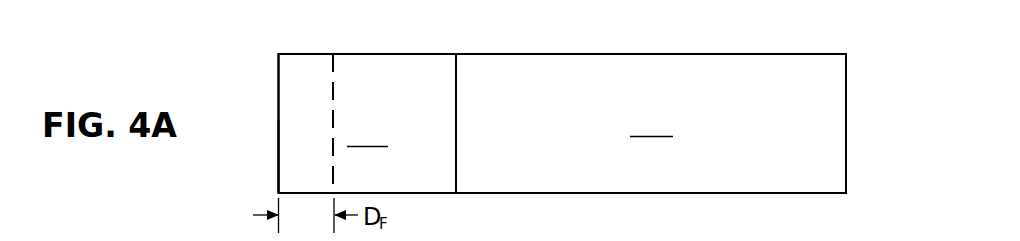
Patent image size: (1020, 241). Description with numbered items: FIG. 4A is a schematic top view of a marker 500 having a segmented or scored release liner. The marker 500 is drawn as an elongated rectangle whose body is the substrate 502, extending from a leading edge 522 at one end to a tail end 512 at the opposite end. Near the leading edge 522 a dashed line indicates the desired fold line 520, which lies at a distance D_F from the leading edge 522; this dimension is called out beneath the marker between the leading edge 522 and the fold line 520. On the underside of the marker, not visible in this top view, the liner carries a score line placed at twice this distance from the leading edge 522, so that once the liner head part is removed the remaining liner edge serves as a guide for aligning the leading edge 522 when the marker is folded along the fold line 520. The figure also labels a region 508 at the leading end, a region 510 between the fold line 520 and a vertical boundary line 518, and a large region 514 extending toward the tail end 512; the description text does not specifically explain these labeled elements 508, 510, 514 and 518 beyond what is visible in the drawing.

The marker 500 is at (920, 115).
The substrate 502 is at (603, 85).
The leading edge region 508 is at (263, 118).
The leading edge margin region 510 is at (370, 135).
The tail end 512 is at (856, 172).
The print area 514 is at (653, 125).
The print start line 518 is at (457, 110).
The fold line 520 is at (333, 95).
The leading edge 522 is at (279, 150).